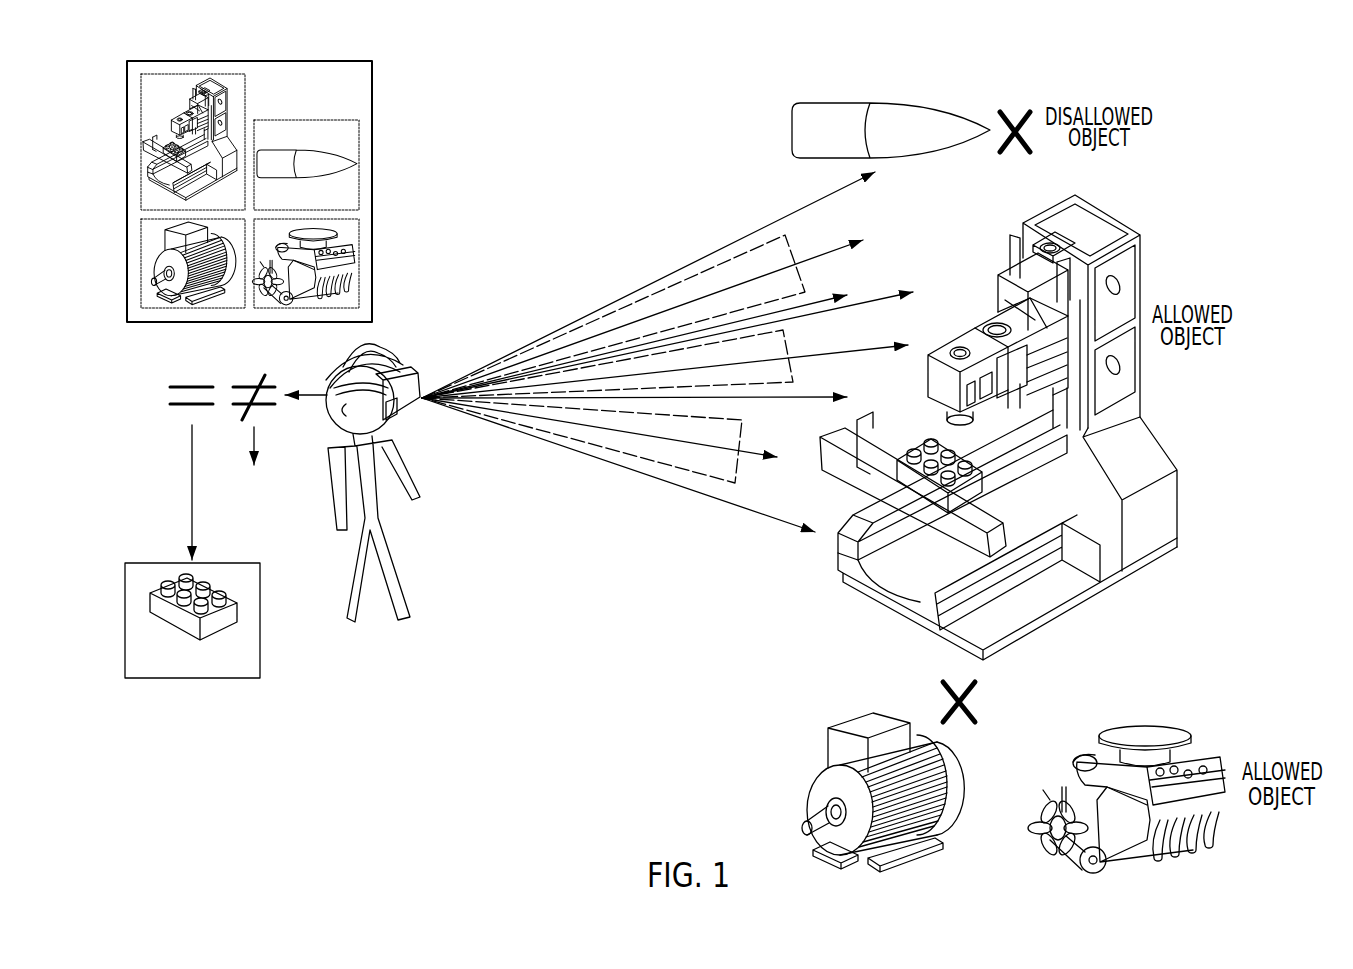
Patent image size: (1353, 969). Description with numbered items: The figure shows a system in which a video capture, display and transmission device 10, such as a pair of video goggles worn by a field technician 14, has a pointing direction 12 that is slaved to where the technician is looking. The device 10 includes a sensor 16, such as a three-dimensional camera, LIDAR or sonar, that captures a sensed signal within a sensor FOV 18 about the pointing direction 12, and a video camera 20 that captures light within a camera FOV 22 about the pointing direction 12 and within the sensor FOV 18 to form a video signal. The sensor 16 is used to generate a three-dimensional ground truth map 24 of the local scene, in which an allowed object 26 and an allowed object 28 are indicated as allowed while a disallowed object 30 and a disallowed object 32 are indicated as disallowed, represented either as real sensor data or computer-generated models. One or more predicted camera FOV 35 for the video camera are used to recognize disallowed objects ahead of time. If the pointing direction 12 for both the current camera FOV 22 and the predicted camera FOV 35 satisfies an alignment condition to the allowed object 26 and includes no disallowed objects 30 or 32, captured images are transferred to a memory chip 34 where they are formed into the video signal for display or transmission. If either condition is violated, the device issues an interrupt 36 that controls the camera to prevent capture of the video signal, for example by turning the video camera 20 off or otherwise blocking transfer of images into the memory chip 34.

The video capture, display and transmission device 10 is at (313, 355).
The pointing direction 12 is at (820, 253).
The field technician 14 is at (388, 542).
The sensor 16 is at (410, 377).
The sensor FOV 18 is at (763, 513).
The video camera 20 is at (413, 413).
The camera FOV 22 is at (811, 388).
The 3D ground truth map 24 is at (372, 92).
The allowed object 26 is at (1160, 436).
The allowed object 28 is at (1170, 725).
The disallowed object 30 is at (855, 102).
The disallowed object 32 is at (958, 760).
The memory chip 34 is at (125, 621).
The predicted camera FOV 35 is at (818, 203).
The interrupt 36 is at (253, 507).